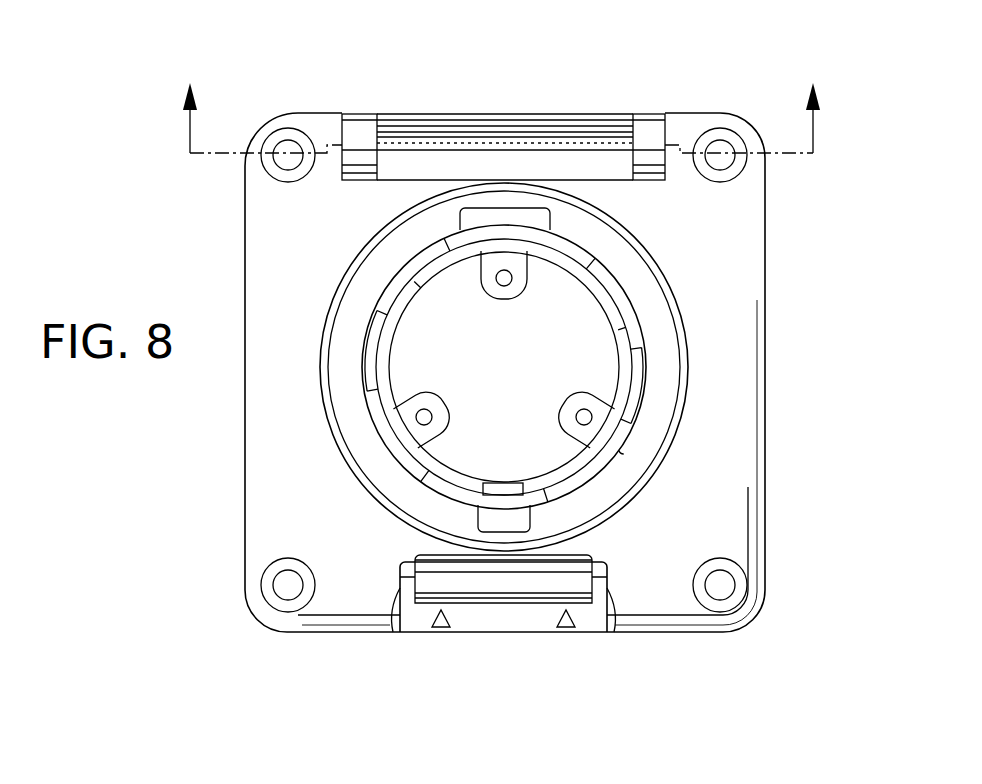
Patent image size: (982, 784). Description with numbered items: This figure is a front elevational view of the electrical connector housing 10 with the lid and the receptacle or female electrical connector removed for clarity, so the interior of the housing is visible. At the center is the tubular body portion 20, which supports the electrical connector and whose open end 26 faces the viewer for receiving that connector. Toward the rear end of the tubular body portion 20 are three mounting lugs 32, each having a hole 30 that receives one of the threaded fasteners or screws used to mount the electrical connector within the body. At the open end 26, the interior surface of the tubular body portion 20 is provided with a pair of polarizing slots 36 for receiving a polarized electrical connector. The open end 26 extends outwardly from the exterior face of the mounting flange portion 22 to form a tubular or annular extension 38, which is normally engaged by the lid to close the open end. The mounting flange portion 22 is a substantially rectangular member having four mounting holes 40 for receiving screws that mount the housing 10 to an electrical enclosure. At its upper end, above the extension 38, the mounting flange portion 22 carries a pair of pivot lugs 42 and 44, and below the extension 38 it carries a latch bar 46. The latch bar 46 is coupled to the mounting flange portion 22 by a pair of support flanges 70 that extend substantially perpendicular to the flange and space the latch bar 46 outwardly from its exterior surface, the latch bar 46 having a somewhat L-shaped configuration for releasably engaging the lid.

The electrical connector housing 10 is at (503, 104).
The tubular body portion 20 is at (694, 313).
The mounting flange portion 22 is at (780, 258).
The open end 26 is at (615, 455).
The holes 30 is at (510, 285).
The mounting lugs 32 is at (503, 298).
The polarizing slots 36 is at (545, 220).
The tubular or annular extension 38 is at (682, 420).
The mounting holes 40 is at (279, 160).
The pivot lug 42 is at (377, 118).
The pivot lug 44 is at (633, 118).
The latch bar 46 is at (543, 622).
The support flanges 70 is at (391, 636).